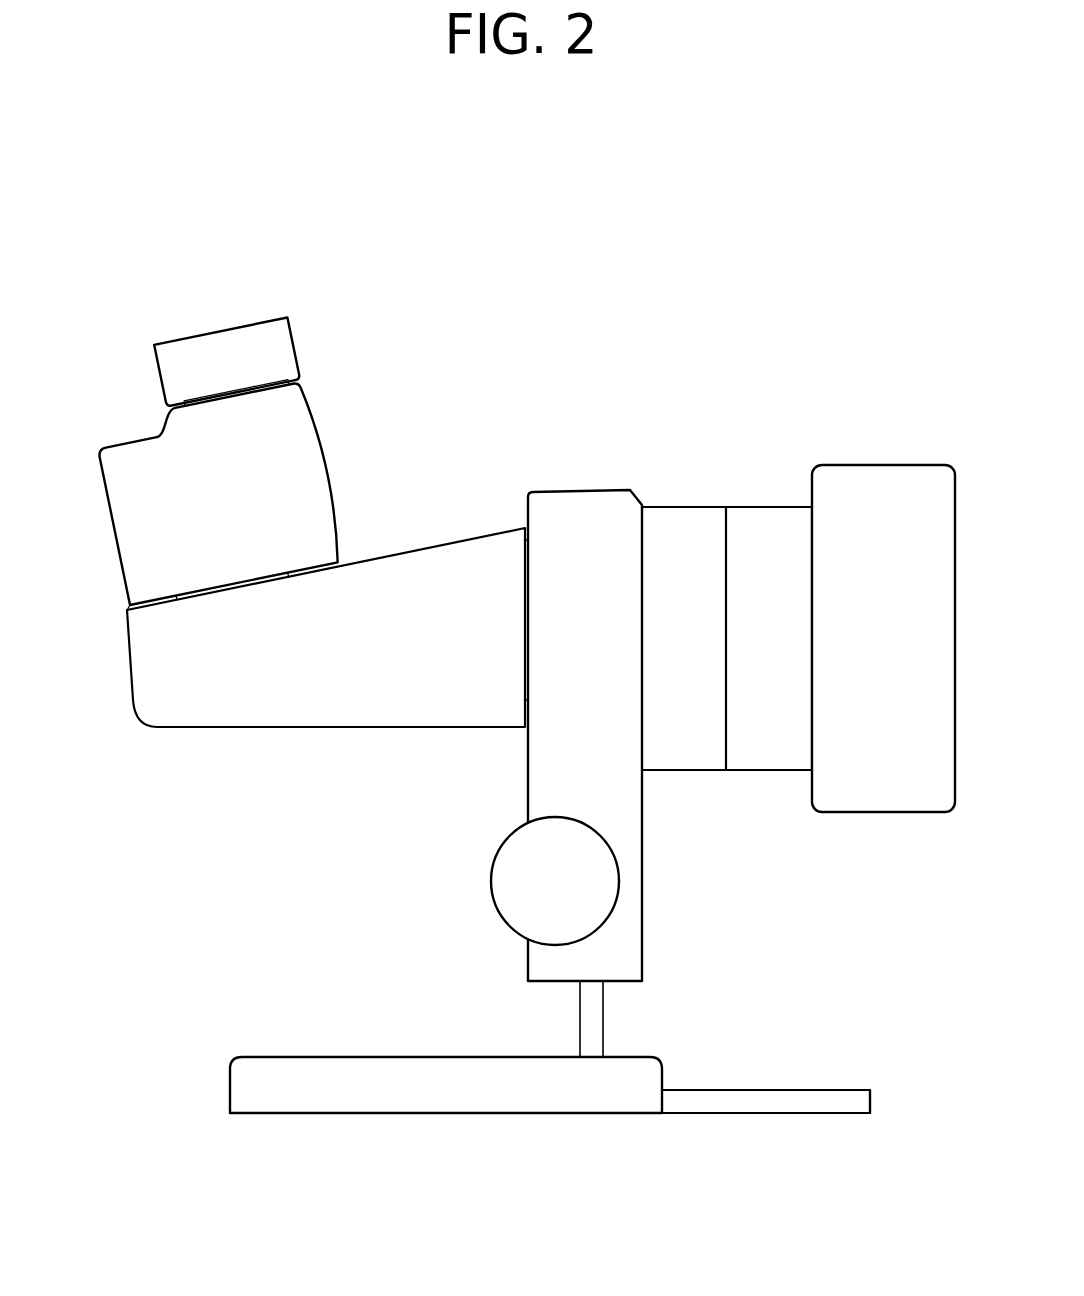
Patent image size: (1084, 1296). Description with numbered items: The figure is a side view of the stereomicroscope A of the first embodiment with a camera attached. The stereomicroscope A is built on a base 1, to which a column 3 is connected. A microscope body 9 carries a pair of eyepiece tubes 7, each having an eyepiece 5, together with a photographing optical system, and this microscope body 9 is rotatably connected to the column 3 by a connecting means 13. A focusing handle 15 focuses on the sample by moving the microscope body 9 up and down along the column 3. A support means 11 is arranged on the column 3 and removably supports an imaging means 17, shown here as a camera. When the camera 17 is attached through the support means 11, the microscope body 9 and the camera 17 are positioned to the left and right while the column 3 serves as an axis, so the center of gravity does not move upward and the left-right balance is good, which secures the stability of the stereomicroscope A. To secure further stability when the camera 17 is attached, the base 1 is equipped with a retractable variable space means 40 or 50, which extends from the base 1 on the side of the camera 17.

The stereomicroscope A is at (336, 298).
The base 1 is at (317, 1068).
The column 3 is at (588, 510).
The eyepiece 5 is at (192, 350).
The eyepiece tube 7 is at (112, 462).
The microscope body 9 is at (395, 500).
The support means 11 is at (673, 522).
The connecting means 13 is at (523, 583).
The focusing handle 15 is at (607, 882).
The imaging means 17 is at (889, 483).
The variable space means 40 is at (760, 1126).
The variable space means 50 is at (766, 1101).